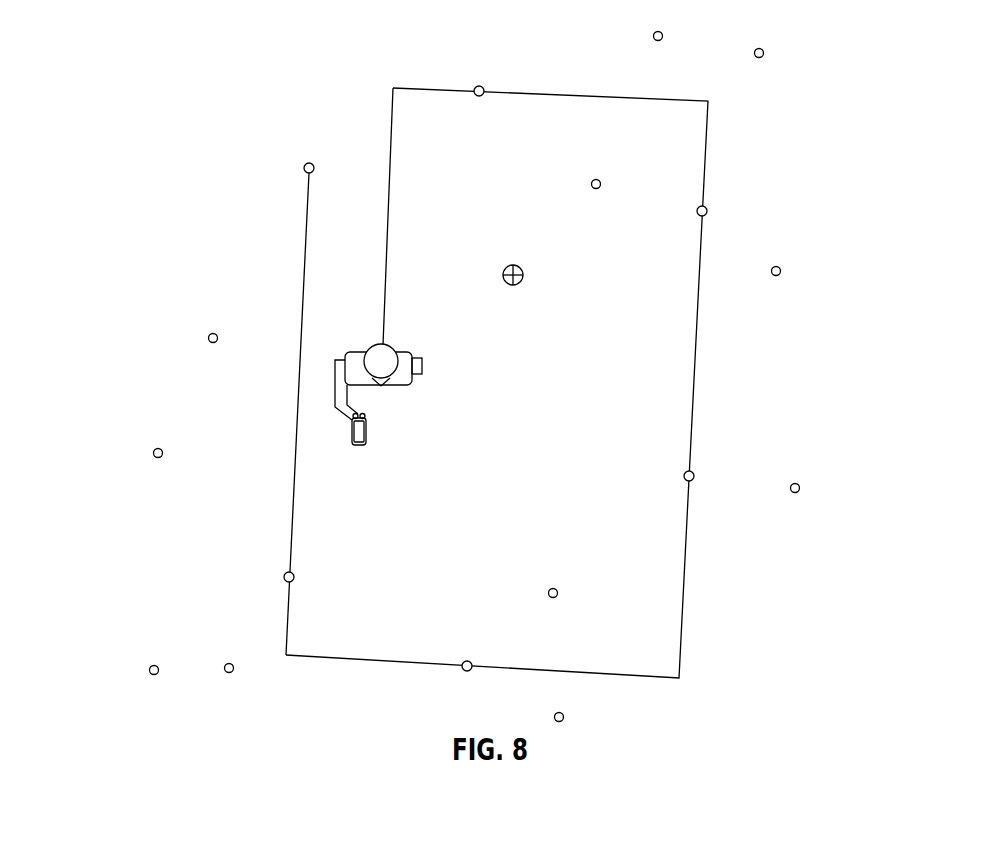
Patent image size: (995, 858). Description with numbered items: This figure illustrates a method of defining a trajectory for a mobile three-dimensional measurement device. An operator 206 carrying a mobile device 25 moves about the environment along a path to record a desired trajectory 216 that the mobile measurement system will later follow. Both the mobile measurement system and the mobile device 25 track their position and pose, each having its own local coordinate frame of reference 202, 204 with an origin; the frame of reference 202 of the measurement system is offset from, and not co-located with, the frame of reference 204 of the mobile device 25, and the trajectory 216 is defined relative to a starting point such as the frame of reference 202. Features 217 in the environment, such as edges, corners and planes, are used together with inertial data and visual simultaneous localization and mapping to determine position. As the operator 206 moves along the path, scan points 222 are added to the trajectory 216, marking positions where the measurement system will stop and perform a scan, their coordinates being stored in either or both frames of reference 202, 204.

The mobile device 25 is at (367, 433).
The local coordinate frame of reference 202 is at (308, 163).
The local coordinate frame of reference 204 is at (505, 270).
The operator 206 is at (422, 366).
The trajectory 216 is at (695, 393).
The features 217 is at (660, 41).
The scan points 222 is at (482, 86).